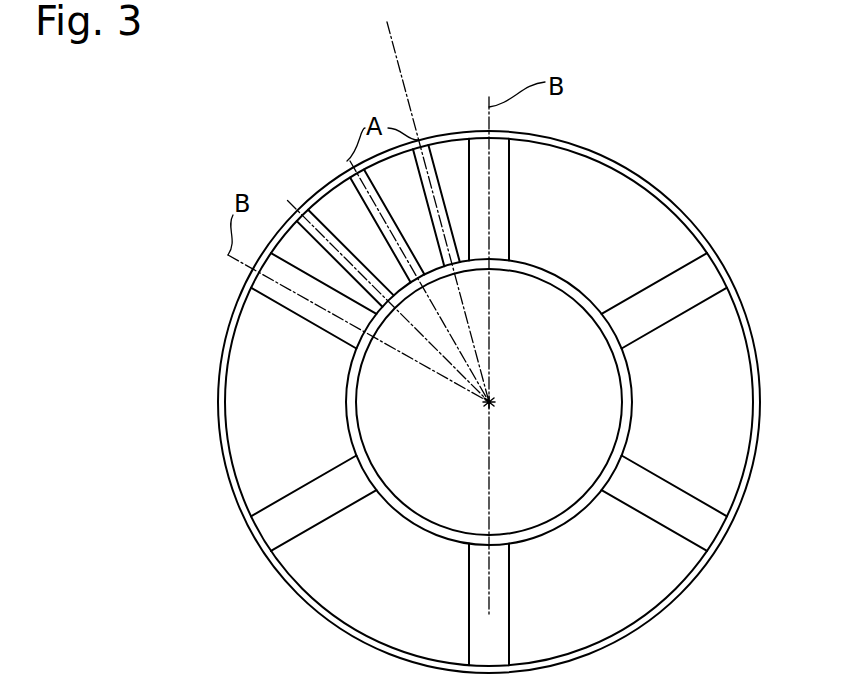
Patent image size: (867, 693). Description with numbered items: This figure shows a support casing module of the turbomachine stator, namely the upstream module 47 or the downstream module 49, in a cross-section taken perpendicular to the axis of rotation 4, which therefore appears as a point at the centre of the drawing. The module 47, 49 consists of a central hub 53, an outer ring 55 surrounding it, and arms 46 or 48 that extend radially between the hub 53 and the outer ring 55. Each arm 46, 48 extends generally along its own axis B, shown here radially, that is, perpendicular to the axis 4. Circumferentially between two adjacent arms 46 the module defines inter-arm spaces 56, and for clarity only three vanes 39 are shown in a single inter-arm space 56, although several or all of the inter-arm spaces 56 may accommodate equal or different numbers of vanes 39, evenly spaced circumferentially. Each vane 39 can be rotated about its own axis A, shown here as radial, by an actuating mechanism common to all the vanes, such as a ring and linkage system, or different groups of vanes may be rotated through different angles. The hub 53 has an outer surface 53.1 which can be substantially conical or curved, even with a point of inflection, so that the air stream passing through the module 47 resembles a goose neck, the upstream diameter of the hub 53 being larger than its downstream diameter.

The axis of rotation 4 is at (493, 401).
The vanes 39 is at (421, 180).
The arms 46 is at (489, 402).
The arms 48 is at (680, 285).
The upstream module 47 is at (101, 165).
The downstream module 49 is at (124, 194).
The hub 53 is at (541, 402).
The outer surface 53.1 is at (634, 411).
The outer ring 55 is at (650, 188).
The inter-arm spaces 56 is at (592, 269).